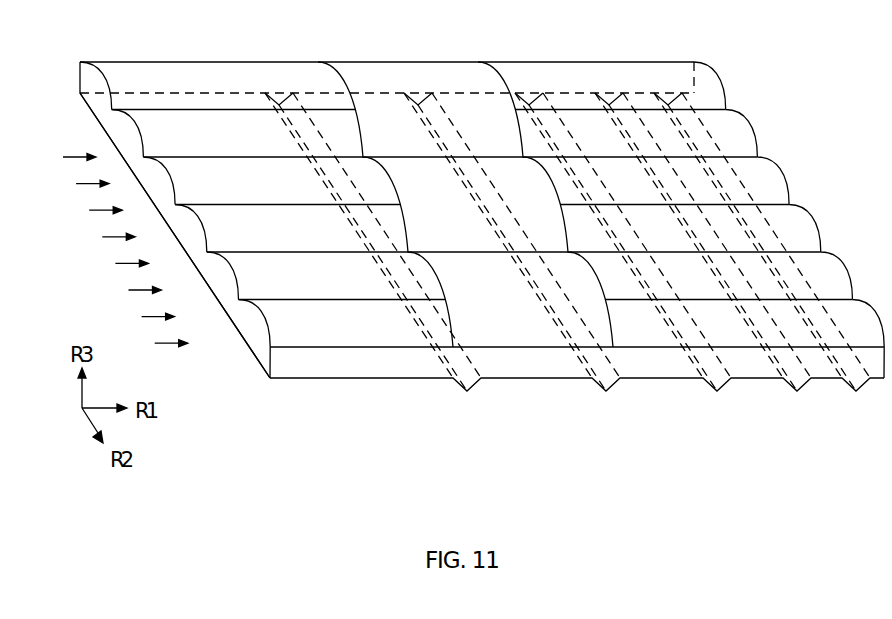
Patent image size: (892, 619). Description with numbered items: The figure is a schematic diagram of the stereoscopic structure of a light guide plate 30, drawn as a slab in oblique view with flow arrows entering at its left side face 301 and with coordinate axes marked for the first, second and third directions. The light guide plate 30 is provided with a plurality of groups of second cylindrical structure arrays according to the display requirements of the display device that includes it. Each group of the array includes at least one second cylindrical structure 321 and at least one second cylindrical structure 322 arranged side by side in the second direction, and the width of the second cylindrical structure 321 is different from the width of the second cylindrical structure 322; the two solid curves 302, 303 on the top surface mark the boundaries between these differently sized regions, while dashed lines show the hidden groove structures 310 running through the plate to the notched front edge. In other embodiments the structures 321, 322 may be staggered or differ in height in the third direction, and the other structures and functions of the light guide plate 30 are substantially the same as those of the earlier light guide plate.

The light guide plate 30 is at (829, 44).
The light incident surface 301 is at (252, 332).
The first lens region 302 is at (327, 93).
The second lens region 303 is at (378, 61).
The prism microstructures on bottom surface 310 is at (803, 387).
The second cylindrical structure 321 is at (636, 322).
The second cylindrical structure 322 is at (512, 318).